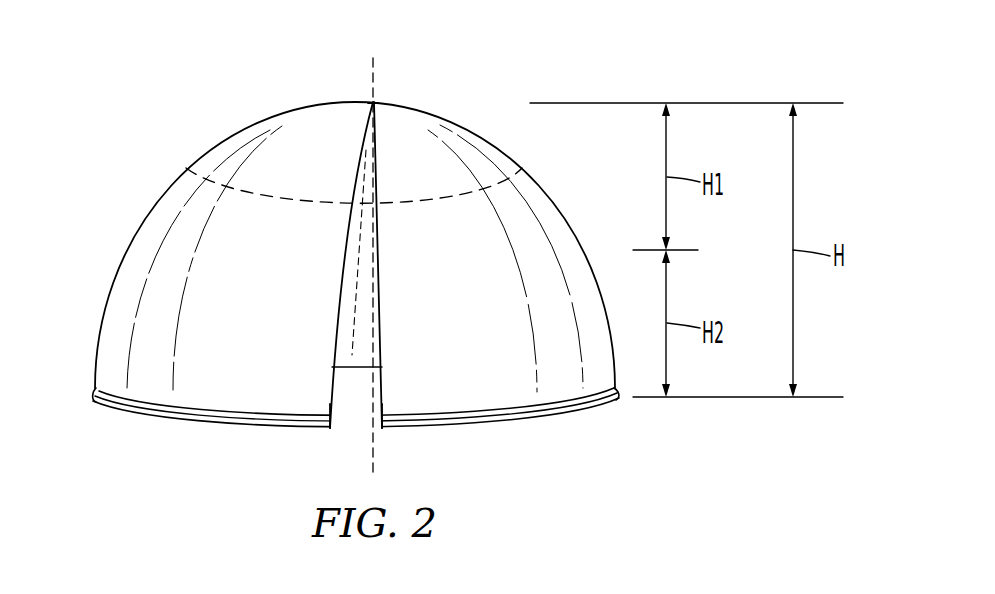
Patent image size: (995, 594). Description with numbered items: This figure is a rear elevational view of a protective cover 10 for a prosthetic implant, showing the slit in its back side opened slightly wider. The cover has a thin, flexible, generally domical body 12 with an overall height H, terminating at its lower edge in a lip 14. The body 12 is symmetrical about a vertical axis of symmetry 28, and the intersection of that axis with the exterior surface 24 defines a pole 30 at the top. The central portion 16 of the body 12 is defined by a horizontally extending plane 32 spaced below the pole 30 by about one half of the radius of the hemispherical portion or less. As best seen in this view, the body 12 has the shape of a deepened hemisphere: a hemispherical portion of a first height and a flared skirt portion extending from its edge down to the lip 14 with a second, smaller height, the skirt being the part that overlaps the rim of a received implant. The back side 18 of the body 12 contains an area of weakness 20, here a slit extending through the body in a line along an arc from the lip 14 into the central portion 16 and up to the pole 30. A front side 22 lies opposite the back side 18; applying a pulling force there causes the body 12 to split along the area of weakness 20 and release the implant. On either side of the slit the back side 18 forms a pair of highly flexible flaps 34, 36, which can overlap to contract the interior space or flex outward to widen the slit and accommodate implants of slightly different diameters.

The protective cover 10 is at (533, 86).
The body 12 is at (108, 304).
The lip 14 is at (132, 410).
The central portion 16 is at (306, 123).
The back side 18 is at (425, 348).
The area of weakness 20 is at (338, 273).
The front side 22 is at (360, 358).
The exterior surface 24 is at (487, 302).
The axis of symmetry 28 is at (370, 61).
The pole 30 is at (374, 102).
The horizontally extending plane 32 is at (403, 203).
The flap 34 is at (308, 404).
The flap 36 is at (400, 407).